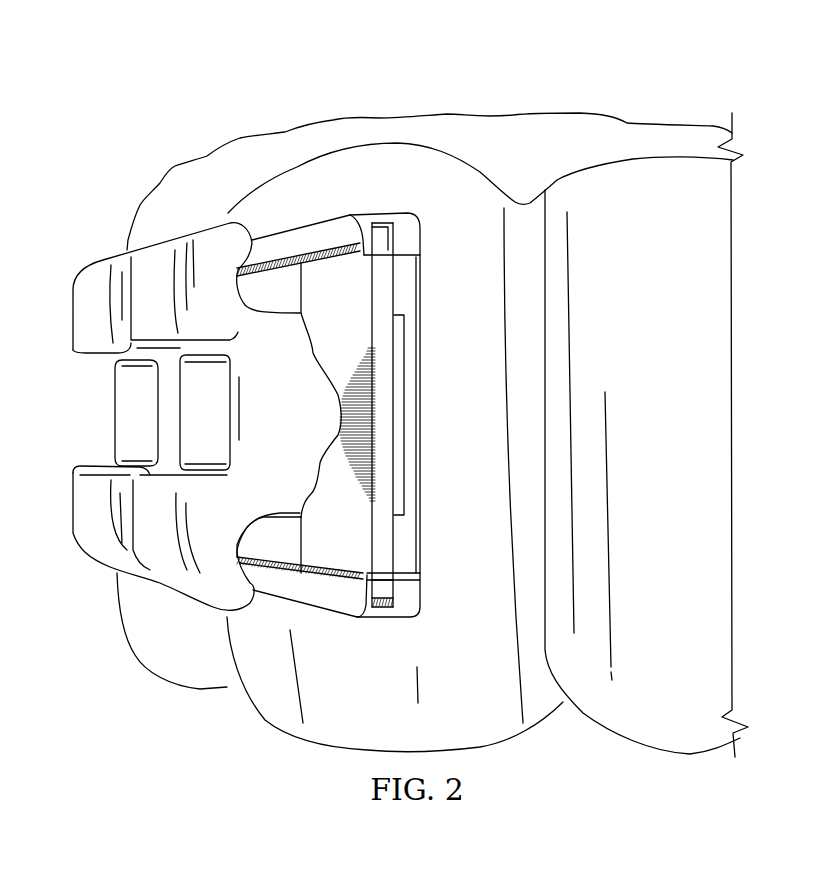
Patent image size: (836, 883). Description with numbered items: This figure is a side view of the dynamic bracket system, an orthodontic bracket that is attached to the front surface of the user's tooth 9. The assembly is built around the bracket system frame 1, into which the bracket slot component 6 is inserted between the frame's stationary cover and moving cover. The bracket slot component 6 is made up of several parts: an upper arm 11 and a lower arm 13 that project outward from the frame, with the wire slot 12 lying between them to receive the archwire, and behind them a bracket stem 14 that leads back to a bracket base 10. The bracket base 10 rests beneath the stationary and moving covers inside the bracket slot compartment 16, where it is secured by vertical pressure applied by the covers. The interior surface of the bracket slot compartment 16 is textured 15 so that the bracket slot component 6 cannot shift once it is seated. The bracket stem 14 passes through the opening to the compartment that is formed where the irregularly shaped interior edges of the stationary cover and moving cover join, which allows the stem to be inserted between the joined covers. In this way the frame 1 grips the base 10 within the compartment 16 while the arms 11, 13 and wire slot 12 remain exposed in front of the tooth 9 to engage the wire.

The bracket system frame 1 is at (400, 210).
The bracket slot component 6 is at (102, 260).
The tooth surface 9 is at (263, 722).
The bracket base 10 is at (407, 460).
The upper arm of the bracket slot component 11 is at (209, 223).
The wire slot of the bracket slot component 12 is at (100, 413).
The lower arm of the bracket slot component 13 is at (193, 598).
The bracket stem 14 is at (300, 427).
The textured interior surface 15 is at (410, 563).
The bracket slot compartment 16 is at (405, 278).